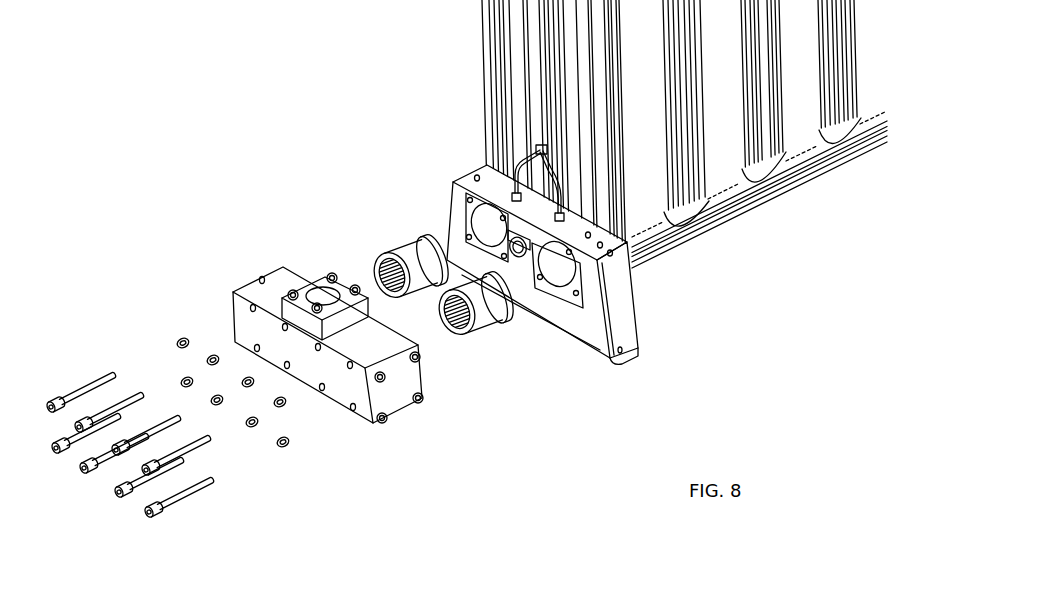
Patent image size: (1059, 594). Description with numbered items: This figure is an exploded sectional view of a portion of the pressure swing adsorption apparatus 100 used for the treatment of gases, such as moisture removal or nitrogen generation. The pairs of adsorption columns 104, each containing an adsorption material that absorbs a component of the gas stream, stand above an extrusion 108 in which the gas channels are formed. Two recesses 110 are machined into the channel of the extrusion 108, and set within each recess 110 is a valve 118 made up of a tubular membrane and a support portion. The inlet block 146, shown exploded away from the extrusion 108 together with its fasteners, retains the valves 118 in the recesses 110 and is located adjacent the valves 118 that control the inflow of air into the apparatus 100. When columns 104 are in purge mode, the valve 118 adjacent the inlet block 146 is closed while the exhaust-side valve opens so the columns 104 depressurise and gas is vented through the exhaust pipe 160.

The pressure swing adsorption apparatus 100 is at (212, 108).
The adsorption columns 104 is at (723, 170).
The extrusion 108 is at (650, 252).
The recesses 110 is at (485, 220).
The valve 118 is at (408, 240).
The inlet block 146 is at (249, 318).
The exhaust pipe 160 is at (520, 257).